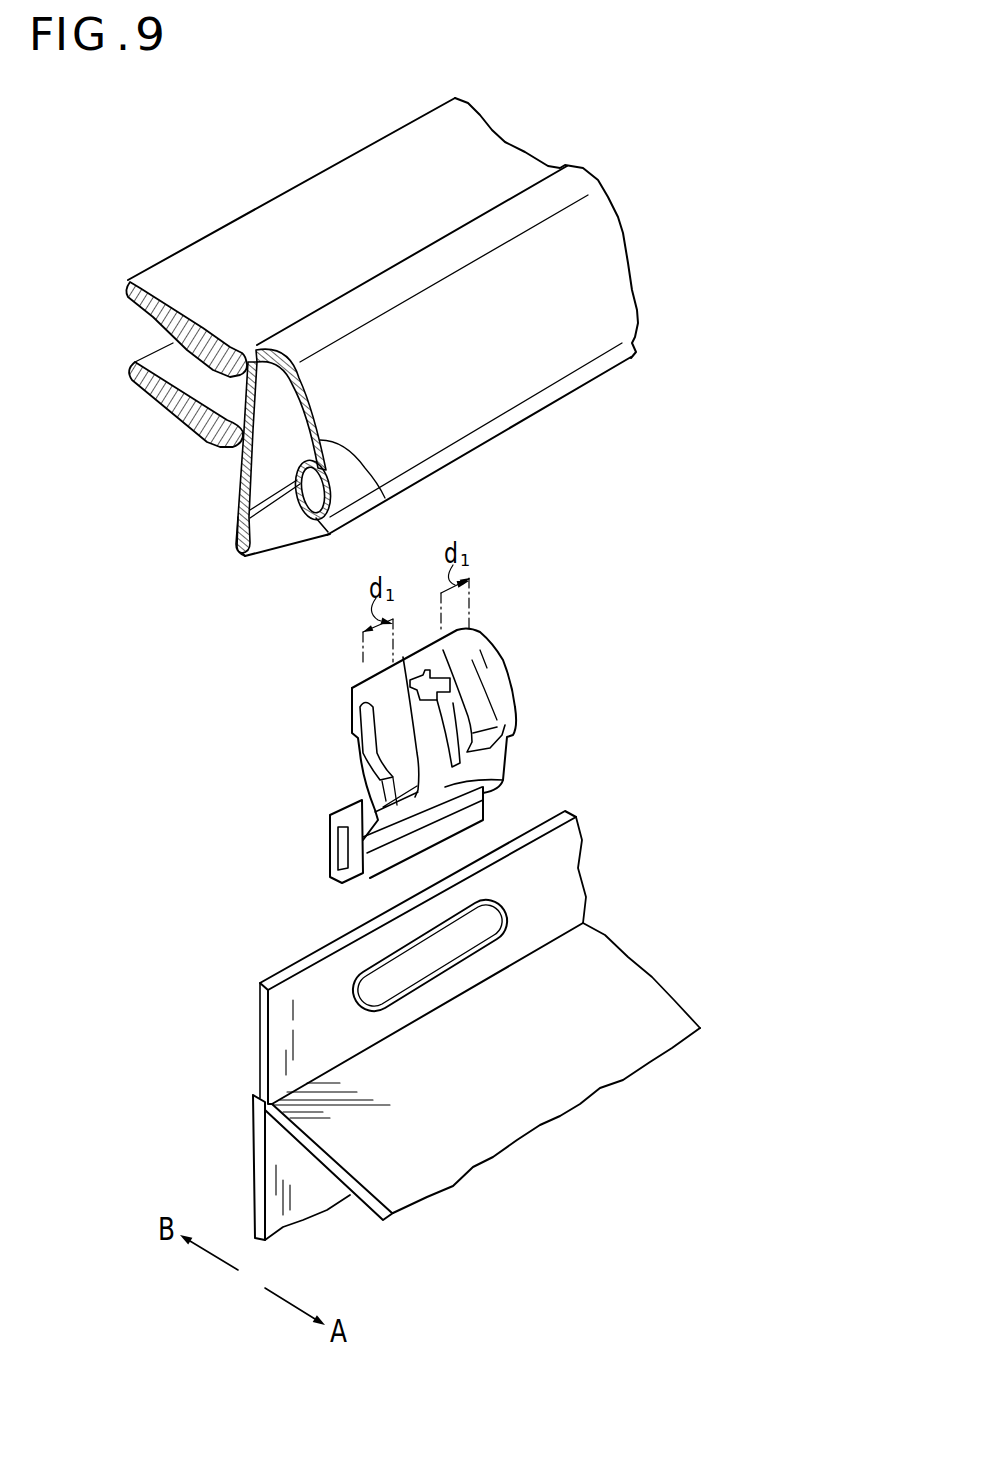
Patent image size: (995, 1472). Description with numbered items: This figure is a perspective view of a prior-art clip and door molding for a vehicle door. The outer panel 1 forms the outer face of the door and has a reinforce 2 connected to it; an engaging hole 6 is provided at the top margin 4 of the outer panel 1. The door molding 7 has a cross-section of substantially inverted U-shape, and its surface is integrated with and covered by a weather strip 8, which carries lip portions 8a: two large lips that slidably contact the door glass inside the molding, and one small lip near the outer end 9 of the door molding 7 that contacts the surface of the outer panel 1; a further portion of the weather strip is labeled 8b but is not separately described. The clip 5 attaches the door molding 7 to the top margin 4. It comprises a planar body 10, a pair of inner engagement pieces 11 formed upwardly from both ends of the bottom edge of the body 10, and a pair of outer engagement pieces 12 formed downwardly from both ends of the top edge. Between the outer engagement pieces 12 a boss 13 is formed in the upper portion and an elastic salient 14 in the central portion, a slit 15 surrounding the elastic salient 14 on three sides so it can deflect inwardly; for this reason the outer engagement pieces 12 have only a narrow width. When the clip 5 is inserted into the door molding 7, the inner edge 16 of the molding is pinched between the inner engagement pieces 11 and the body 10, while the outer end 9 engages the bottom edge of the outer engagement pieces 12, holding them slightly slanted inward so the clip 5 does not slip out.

The outer panel 1 is at (456, 1025).
The reinforce 2 is at (253, 1170).
The top margin 4 is at (460, 957).
The clip 5 is at (416, 733).
The engaging hole 6 is at (352, 985).
The door molding 7 is at (275, 453).
The weather strip 8 is at (607, 262).
The lip portion 8a is at (132, 366).
The channel wall 8b is at (320, 530).
The outer end 9 is at (318, 443).
The planar body 10 is at (360, 771).
The inner engagement pieces 11 is at (328, 832).
The outer engagement pieces 12 is at (482, 788).
The boss 13 is at (422, 670).
The elastic salient 14 is at (477, 674).
The slit 15 is at (495, 718).
The inner edge 16 is at (247, 550).